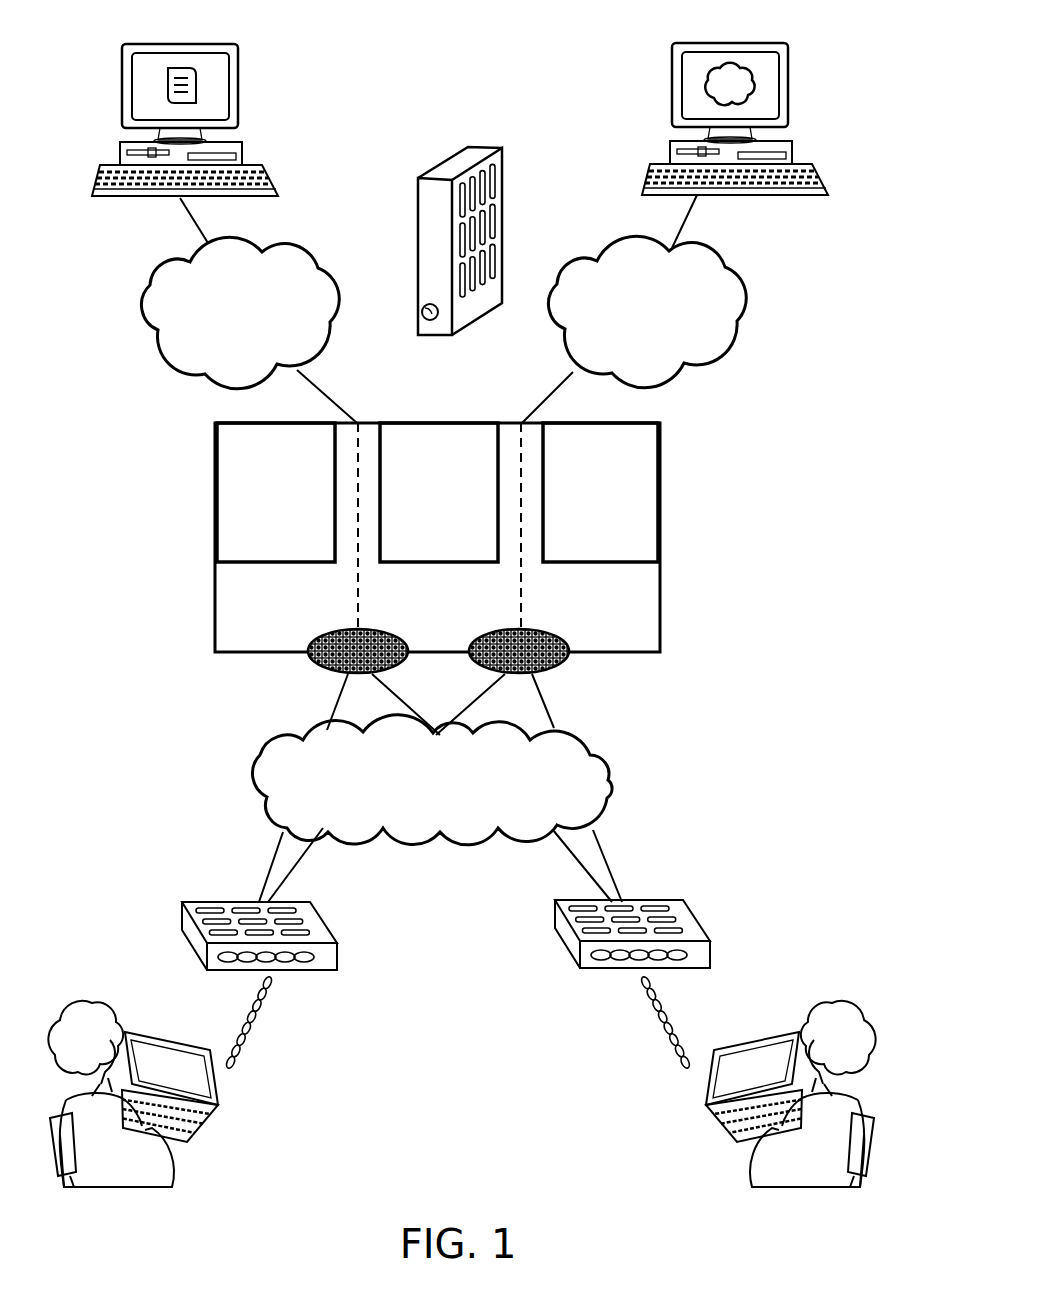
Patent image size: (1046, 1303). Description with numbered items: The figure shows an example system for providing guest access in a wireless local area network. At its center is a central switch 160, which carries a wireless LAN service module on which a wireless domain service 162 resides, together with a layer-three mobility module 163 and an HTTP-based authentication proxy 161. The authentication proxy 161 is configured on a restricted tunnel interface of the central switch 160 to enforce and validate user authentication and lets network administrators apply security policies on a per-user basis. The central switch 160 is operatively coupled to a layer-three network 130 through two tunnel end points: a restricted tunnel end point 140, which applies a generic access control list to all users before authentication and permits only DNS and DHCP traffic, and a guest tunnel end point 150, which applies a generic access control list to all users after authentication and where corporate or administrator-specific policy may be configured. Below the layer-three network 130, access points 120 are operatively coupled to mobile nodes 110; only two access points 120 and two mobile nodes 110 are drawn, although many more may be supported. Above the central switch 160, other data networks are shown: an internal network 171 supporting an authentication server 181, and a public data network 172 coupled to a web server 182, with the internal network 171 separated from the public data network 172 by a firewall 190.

The mobile node 110 is at (215, 1128).
The access point 120 is at (183, 909).
The layer 3 network 130 is at (425, 812).
The restricted tunnel end point 140 is at (304, 667).
The guest tunnel end point 150 is at (583, 668).
The central switch 160 is at (467, 571).
The authentication proxy 161 is at (272, 564).
The wireless domain service 162 is at (435, 564).
The layer-3 mobility module 163 is at (602, 564).
The internal network 171 is at (228, 357).
The public data network 172 is at (635, 357).
The authentication server 181 is at (238, 74).
The web server 182 is at (672, 70).
The firewall 190 is at (452, 150).